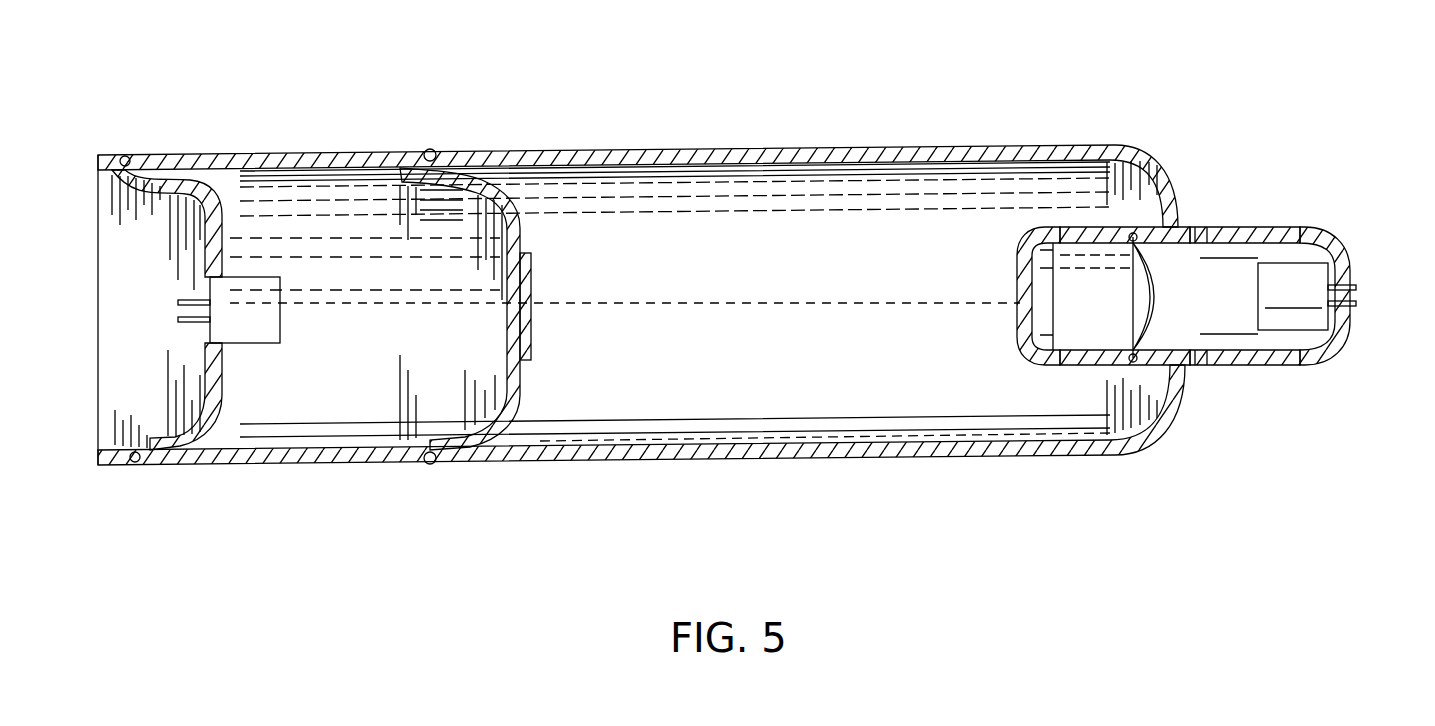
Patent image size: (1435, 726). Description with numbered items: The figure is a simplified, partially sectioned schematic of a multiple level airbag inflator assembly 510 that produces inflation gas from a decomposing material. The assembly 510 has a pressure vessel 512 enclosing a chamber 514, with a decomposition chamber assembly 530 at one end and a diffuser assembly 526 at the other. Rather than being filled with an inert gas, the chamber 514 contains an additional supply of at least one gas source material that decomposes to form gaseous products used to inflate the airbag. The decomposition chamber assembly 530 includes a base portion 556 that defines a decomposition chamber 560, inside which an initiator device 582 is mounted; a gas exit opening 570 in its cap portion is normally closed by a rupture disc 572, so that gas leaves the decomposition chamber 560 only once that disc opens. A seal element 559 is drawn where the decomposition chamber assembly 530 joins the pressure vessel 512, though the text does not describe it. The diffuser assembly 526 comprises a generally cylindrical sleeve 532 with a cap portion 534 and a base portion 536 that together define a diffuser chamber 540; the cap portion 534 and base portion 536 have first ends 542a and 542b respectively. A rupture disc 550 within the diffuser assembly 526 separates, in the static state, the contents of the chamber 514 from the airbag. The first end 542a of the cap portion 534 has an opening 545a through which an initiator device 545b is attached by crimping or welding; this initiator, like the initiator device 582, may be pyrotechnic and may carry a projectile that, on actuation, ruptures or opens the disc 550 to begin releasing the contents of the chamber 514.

The multiple level airbag inflator assembly 510 is at (688, 127).
The pressure vessel 512 is at (825, 146).
The chamber 514 is at (572, 188).
The decomposition chamber assembly 530 is at (282, 150).
The base portion 556 is at (193, 447).
The decomposition chamber 560 is at (306, 390).
The seal bead 559 is at (386, 455).
The gas exit opening 570 is at (507, 302).
The rupture disc 572 is at (530, 302).
The initiator device 582 is at (280, 298).
The diffuser assembly 526 is at (1296, 228).
The diffuser chamber 540 is at (1256, 258).
The sleeve 532 is at (1262, 358).
The cap portion 534 is at (1320, 352).
The base portion 536 is at (1018, 275).
The first end 542a is at (1350, 330).
The first end 542b is at (1020, 310).
The rupture disc 550 is at (1155, 305).
The opening 545a is at (1345, 250).
The initiator device 545b is at (1293, 296).